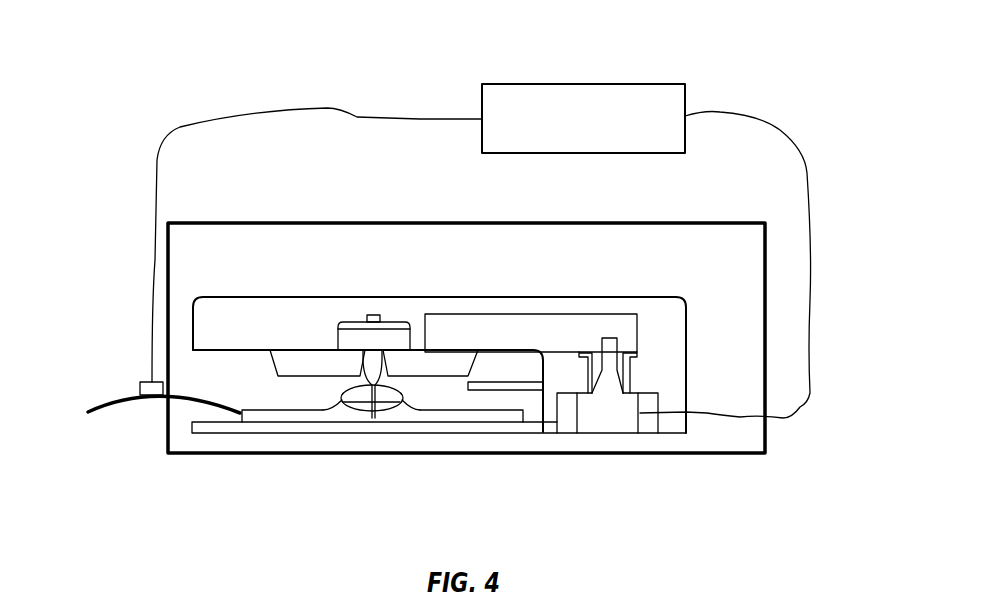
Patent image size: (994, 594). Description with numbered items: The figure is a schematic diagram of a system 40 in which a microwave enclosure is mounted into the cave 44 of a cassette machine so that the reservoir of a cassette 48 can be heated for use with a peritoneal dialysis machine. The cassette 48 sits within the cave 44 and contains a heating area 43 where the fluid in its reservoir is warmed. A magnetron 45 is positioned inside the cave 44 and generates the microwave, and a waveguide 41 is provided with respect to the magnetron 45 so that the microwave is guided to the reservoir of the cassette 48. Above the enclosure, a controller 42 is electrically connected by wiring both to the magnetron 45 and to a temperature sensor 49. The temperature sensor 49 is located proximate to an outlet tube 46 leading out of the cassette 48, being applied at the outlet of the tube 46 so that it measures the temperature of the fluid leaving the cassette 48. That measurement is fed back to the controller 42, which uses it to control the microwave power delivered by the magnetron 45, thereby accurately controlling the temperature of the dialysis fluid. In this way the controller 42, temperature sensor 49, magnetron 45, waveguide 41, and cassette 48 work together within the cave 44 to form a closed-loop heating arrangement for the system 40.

The system 40 is at (183, 60).
The waveguide 41 is at (545, 323).
The controller 42 is at (647, 84).
The heating area 43 is at (380, 407).
The cave 44 is at (725, 221).
The magnetron 45 is at (612, 410).
The outlet tube 46 is at (102, 415).
The cassette 48 is at (283, 412).
The temperature sensor 49 is at (140, 387).